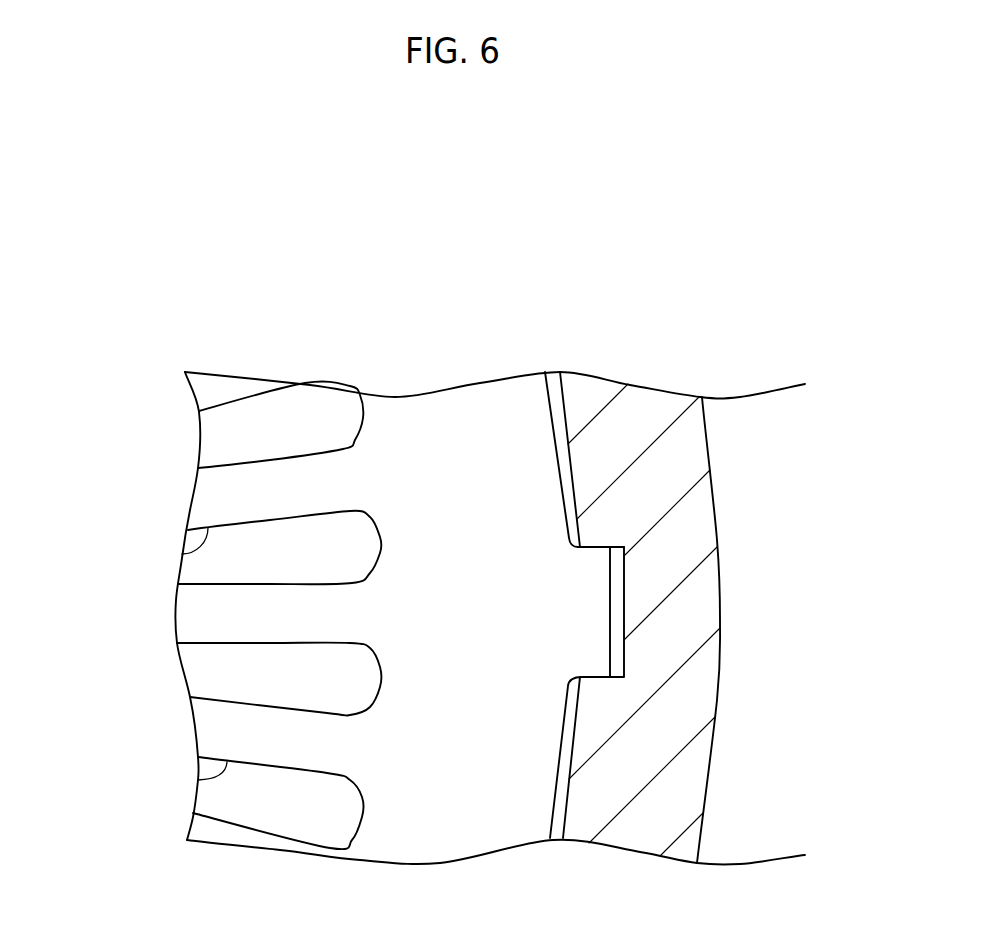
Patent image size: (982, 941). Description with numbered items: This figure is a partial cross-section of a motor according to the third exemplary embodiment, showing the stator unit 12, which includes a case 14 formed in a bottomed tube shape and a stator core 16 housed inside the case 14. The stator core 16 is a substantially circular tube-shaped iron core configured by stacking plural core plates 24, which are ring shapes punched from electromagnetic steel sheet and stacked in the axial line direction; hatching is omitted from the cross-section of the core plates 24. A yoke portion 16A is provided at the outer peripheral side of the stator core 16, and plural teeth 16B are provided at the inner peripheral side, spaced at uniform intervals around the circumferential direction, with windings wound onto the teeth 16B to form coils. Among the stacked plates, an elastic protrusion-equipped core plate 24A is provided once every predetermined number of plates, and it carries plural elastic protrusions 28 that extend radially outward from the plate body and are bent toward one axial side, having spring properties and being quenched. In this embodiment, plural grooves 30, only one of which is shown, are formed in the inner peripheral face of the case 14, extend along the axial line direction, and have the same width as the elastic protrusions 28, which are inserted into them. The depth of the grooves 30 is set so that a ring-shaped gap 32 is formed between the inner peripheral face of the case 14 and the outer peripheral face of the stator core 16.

The stator unit 12 is at (812, 432).
The case 14 is at (717, 513).
The stator core 16 is at (562, 462).
The yoke portion 16A is at (443, 840).
The teeth 16B is at (183, 558).
The core plates 24 is at (490, 562).
The elastic protrusion-equipped core plate 24A is at (465, 430).
The elastic protrusions 28 is at (598, 617).
The grooves 30 is at (603, 550).
The ring-shaped gap 32 is at (573, 733).